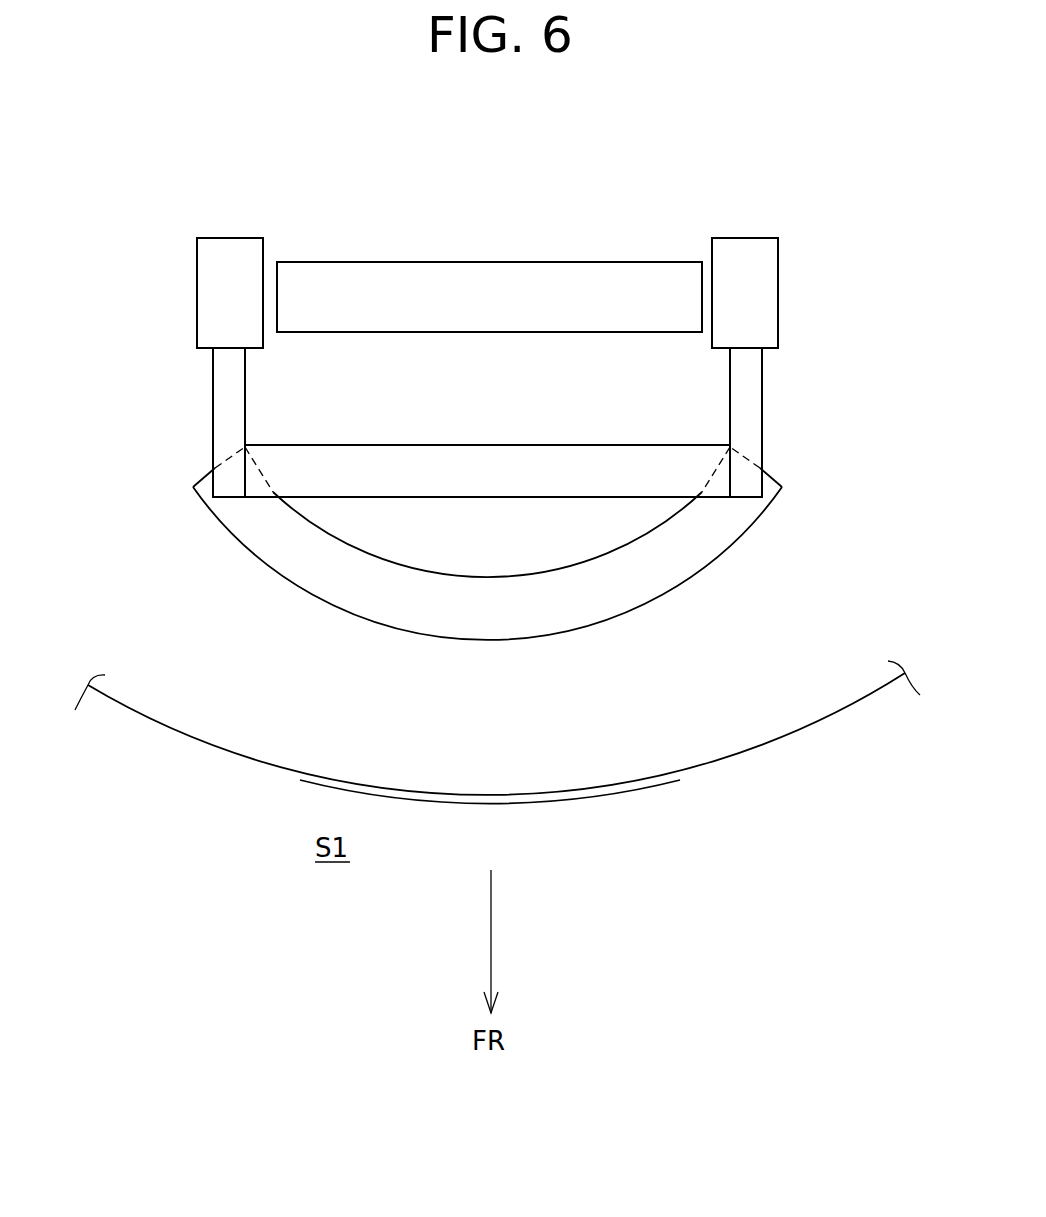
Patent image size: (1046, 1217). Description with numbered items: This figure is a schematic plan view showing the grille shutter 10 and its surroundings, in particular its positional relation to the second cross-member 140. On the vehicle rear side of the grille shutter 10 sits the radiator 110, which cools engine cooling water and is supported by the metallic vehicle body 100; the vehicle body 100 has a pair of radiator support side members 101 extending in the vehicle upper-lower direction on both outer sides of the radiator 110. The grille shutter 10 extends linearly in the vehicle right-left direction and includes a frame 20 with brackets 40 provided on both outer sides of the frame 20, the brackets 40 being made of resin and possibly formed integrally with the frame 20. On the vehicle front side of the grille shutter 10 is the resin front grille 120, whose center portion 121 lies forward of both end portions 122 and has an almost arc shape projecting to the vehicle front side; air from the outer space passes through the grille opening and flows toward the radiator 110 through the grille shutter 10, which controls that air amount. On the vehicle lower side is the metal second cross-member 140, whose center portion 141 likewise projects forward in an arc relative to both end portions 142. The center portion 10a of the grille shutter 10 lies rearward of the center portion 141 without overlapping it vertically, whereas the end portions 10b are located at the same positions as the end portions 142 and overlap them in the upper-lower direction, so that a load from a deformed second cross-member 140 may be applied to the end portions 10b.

The vehicle body 100 is at (490, 246).
The radiator support side member 101 is at (235, 267).
The radiator 110 is at (463, 280).
The bracket 40 is at (229, 409).
The grille shutter 10 is at (530, 440).
The center portion of the grille shutter 10a is at (490, 476).
The end portion of the grille shutter 10b is at (229, 450).
The frame 20 is at (620, 465).
The second cross-member 140 is at (662, 597).
The center portion of the second cross-member 141 is at (492, 618).
The end portion of the second cross-member 142 is at (226, 506).
The front grille 120 is at (703, 770).
The center portion of the front grille 121 is at (492, 792).
The end portion of the front grille 122 is at (113, 702).